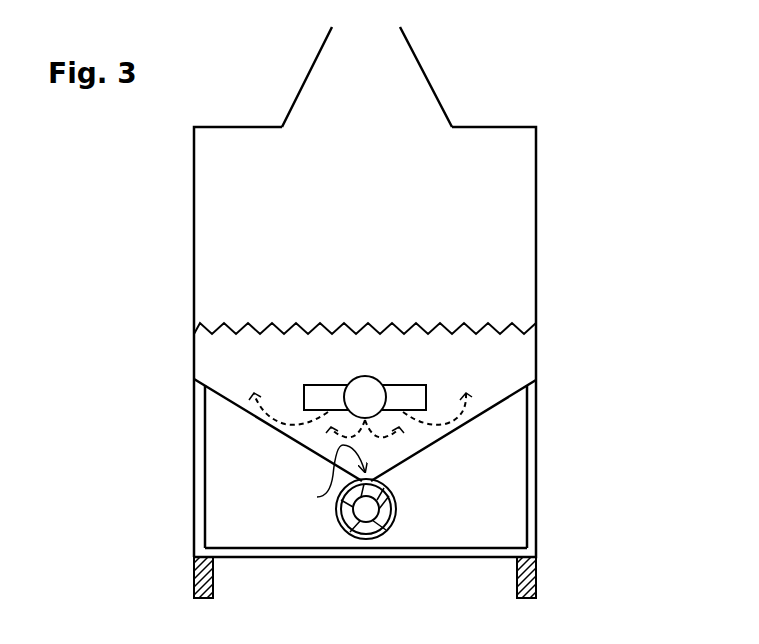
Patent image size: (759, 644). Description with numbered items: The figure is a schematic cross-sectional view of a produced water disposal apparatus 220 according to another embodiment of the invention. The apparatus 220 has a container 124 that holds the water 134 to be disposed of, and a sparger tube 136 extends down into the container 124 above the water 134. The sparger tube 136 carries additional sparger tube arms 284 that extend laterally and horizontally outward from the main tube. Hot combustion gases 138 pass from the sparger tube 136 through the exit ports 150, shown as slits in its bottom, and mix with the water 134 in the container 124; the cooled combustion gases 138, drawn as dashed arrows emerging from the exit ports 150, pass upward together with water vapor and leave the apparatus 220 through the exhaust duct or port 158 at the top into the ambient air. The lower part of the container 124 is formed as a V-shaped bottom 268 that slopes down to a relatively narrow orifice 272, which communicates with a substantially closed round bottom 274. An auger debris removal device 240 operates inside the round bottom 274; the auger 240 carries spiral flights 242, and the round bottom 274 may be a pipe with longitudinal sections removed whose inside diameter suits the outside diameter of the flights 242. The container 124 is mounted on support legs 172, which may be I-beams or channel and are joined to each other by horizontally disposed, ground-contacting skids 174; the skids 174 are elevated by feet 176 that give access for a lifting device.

The produced water disposal apparatus 220 is at (575, 128).
The container 124 is at (536, 261).
The exhaust duct or port 158 is at (422, 65).
The water 134 is at (261, 364).
The hot combustion gases 138 is at (317, 397).
The sparger tube 136 is at (332, 364).
The sparger tube arms 284 is at (427, 393).
The exit ports 150 is at (365, 420).
The support legs 172 is at (200, 463).
The V-shaped bottom 268 is at (305, 448).
The narrow orifice 272 is at (321, 477).
The round bottom 274 is at (373, 503).
The auger debris removal device 240 is at (393, 500).
The flights 242 is at (391, 522).
The skids 174 is at (442, 558).
The feet 176 is at (224, 583).